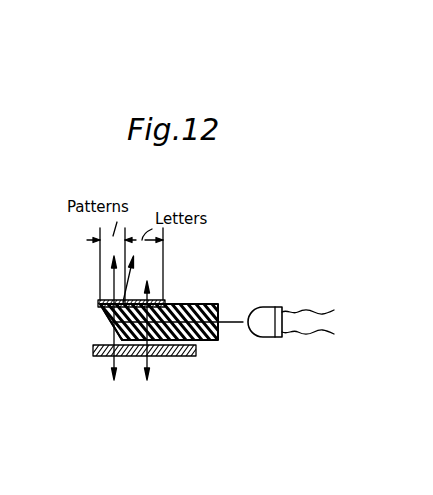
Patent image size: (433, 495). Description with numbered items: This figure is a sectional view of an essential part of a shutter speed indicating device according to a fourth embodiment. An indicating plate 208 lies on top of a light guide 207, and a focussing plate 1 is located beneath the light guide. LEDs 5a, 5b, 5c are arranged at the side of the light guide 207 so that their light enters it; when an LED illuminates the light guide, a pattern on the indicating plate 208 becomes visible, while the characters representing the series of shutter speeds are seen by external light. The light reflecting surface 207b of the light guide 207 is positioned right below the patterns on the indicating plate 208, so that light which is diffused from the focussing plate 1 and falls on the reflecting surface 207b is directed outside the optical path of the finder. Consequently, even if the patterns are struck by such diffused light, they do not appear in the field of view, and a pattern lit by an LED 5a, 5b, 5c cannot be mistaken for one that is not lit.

The light guide 207 is at (198, 304).
The light reflecting surface 207b is at (103, 308).
The indicating plate 208 is at (100, 304).
The focussing plate 1 is at (196, 353).
The LED 5a is at (291, 348).
The LED 5b is at (291, 348).
The LED 5c is at (267, 333).